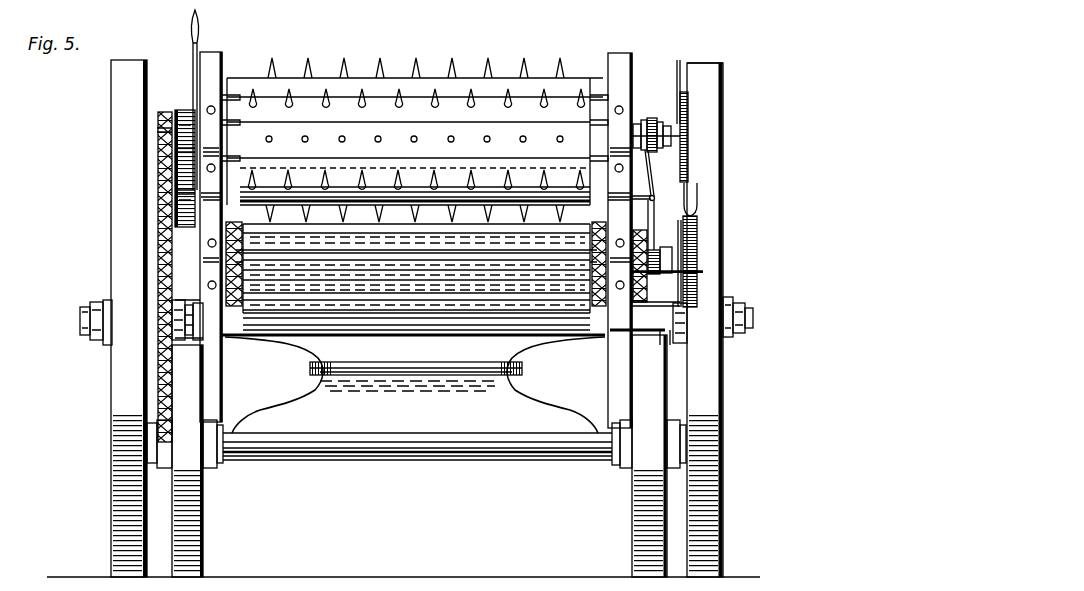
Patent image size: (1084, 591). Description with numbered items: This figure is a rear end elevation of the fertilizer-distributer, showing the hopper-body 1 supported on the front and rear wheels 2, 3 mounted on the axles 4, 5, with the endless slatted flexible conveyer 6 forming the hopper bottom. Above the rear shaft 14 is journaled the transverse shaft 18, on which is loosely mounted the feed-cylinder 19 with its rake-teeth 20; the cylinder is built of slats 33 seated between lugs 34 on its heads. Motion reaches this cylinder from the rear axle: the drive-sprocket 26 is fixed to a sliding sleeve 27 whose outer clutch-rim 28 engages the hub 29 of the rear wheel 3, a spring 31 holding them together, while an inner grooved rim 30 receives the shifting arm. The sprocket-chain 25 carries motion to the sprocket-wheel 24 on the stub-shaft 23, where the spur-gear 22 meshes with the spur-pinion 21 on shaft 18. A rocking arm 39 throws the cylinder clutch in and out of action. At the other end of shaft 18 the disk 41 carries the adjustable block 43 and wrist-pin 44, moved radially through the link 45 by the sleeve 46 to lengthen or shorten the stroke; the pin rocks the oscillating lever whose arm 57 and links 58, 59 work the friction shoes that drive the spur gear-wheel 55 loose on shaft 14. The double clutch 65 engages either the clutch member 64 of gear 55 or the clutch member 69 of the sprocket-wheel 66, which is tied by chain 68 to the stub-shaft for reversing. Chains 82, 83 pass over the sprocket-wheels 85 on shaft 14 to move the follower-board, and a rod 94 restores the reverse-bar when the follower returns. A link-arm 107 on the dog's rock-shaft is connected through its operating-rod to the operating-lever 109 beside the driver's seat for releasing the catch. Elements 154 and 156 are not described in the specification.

The hopper-body 1 is at (620, 240).
The front wheel 2 is at (185, 482).
The rear wheel 3 is at (125, 400).
The front axle 4 is at (425, 447).
The rear axle 5 is at (305, 318).
The endless slatted flexible conveyer 6 is at (417, 272).
The shaft 14 is at (632, 197).
The transverse shaft 18 is at (205, 113).
The feed-cylinder 19 is at (395, 86).
The rake-teeth 20 is at (490, 62).
The spur-pinion 21 is at (188, 148).
The spur-gear 22 is at (188, 193).
The stub-shaft 23 is at (179, 142).
The sprocket-wheel 24 is at (157, 128).
The sprocket-chain 25 is at (185, 110).
The drive-sprocket 26 is at (163, 384).
The sliding sleeve 27 is at (147, 327).
The outer clutch-rim 28 is at (152, 305).
The hub 29 is at (108, 345).
The inner grooved rim 30 is at (182, 338).
The spring 31 is at (198, 345).
The slats 33 is at (530, 85).
The lugs 34 is at (235, 121).
The rocking arm 39 is at (654, 151).
The disk 41 is at (688, 128).
The block 43 is at (679, 60).
The wrist-pin 44 is at (712, 93).
The link 45 is at (662, 130).
The sleeve 46 is at (590, 93).
The spur gear-wheel 55 is at (698, 203).
The arm 57 is at (697, 278).
The link 58 is at (707, 292).
The link 59 is at (678, 307).
The clutch member 64 is at (693, 260).
The double clutch 65 is at (670, 247).
The sprocket-wheel 66 is at (643, 313).
The chain 68 is at (632, 290).
The clutch member 69 is at (668, 347).
The chain 82 is at (237, 307).
The chain 83 is at (593, 307).
The sprocket-wheels 85 is at (245, 251).
The rod 94 is at (190, 300).
The link-arm 107 is at (197, 262).
The operating-lever 109 is at (202, 51).
The stem 154 is at (688, 183).
The rack 156 is at (700, 222).